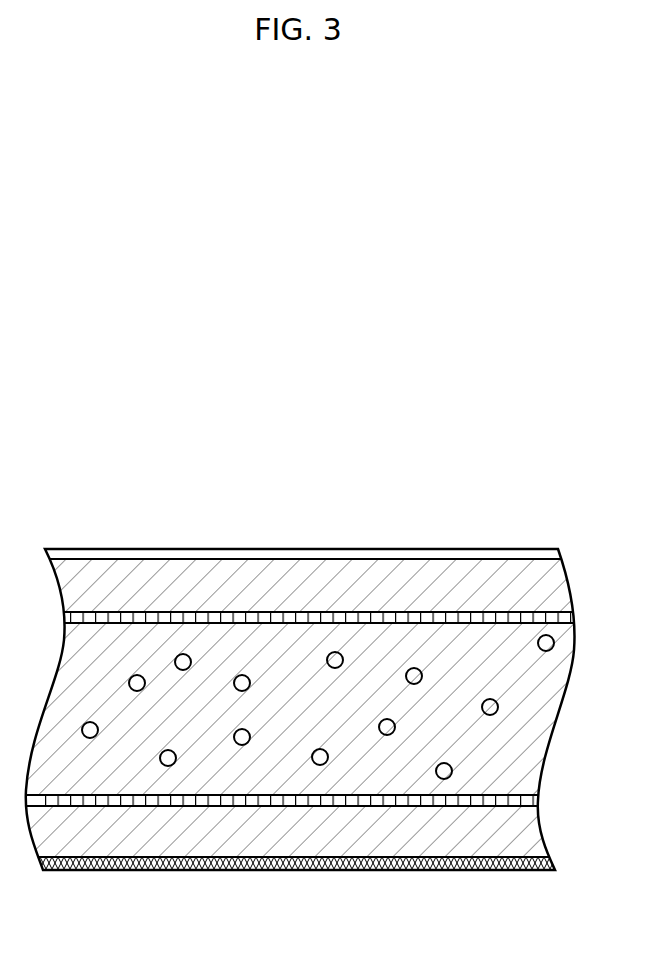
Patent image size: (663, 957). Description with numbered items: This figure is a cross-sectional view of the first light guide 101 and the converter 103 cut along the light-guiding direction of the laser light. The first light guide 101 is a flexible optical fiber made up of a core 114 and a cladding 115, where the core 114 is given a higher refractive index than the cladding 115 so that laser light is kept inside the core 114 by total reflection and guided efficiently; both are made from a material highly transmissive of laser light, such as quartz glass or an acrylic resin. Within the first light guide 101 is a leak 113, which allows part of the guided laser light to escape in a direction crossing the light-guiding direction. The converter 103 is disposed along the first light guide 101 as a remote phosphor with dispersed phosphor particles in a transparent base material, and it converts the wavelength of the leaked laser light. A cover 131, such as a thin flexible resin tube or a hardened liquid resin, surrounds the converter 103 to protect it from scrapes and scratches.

The first light guide 101 is at (225, 494).
The core 114 is at (110, 643).
The cladding 115 is at (187, 612).
The converter 103 is at (278, 578).
The cover 131 is at (377, 549).
The leak 113 is at (169, 766).